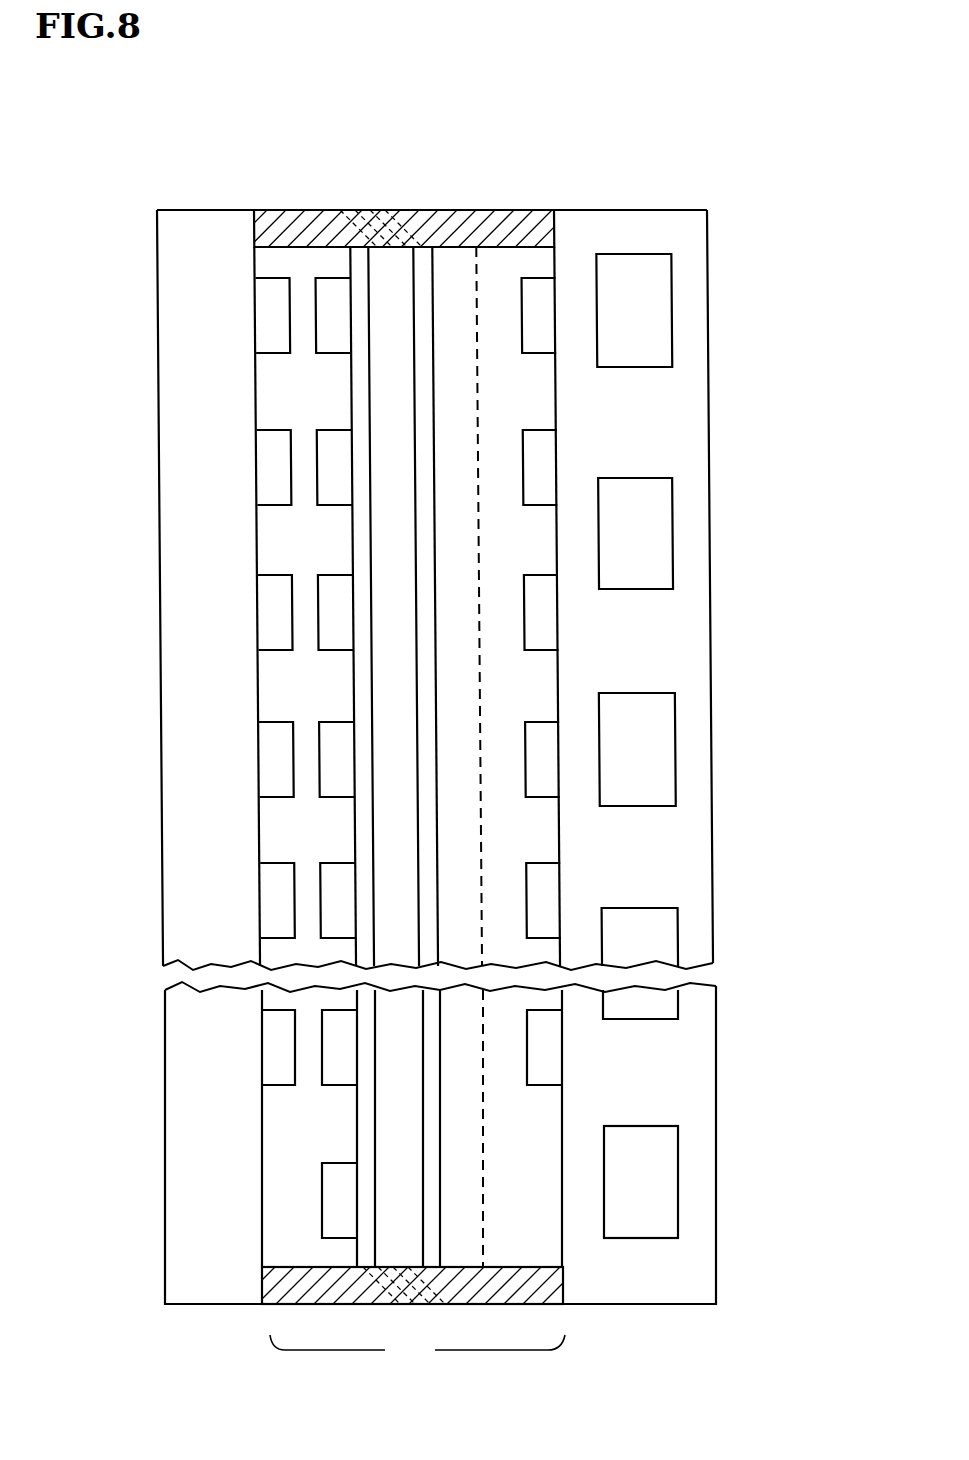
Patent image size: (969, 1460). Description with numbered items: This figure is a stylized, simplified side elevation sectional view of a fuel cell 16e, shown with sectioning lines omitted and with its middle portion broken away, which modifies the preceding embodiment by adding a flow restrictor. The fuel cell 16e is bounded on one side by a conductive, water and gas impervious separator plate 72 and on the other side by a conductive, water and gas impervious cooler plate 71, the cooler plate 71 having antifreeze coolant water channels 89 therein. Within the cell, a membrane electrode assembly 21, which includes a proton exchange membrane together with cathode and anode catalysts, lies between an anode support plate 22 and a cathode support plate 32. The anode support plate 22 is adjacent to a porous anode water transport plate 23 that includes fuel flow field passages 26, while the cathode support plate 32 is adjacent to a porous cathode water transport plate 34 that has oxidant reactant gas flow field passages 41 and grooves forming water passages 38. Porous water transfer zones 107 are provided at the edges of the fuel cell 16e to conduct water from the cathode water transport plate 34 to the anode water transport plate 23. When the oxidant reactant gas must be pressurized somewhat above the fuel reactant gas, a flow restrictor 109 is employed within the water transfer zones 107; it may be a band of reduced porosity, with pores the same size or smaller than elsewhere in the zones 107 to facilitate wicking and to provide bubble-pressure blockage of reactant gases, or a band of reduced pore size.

The fuel cell 16e is at (417, 1350).
The membrane electrode assembly 21 is at (407, 250).
The anode support plate 22 is at (350, 210).
The anode water transport plate 23 is at (250, 254).
The fuel flow field passages 26 is at (338, 488).
The cathode support plate 32 is at (424, 252).
The cathode water transport plate 34 is at (557, 254).
The water passages 38 is at (272, 345).
The oxidant reactant gas flow field passages 41 is at (461, 255).
The cooler plate 71 is at (650, 243).
The separator plate 72 is at (222, 287).
The antifreeze coolant water channels 89 is at (623, 498).
The porous water transfer zones 107 is at (275, 220).
The flow restrictor 109 is at (383, 250).